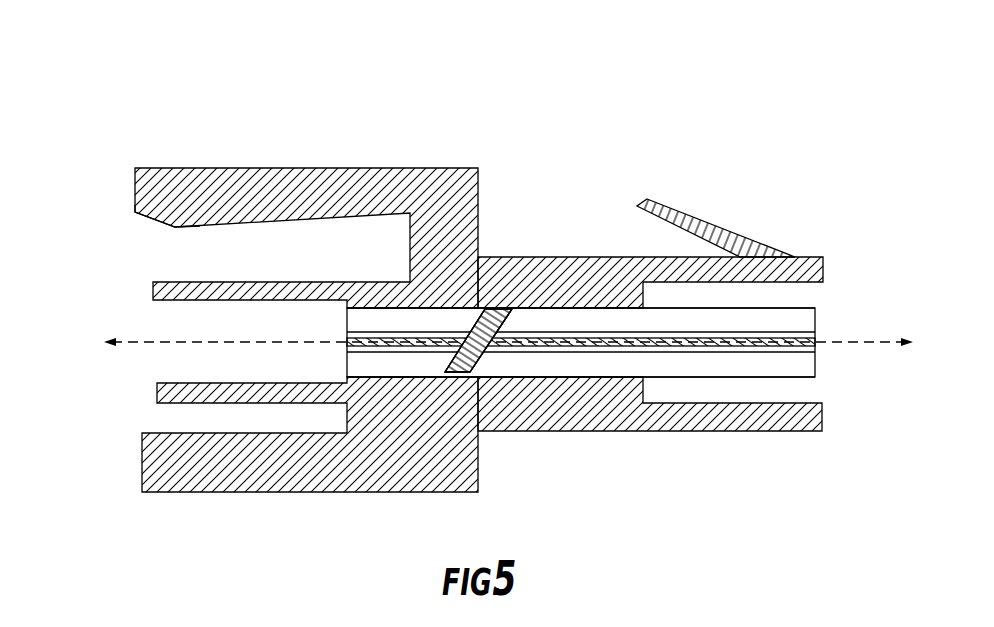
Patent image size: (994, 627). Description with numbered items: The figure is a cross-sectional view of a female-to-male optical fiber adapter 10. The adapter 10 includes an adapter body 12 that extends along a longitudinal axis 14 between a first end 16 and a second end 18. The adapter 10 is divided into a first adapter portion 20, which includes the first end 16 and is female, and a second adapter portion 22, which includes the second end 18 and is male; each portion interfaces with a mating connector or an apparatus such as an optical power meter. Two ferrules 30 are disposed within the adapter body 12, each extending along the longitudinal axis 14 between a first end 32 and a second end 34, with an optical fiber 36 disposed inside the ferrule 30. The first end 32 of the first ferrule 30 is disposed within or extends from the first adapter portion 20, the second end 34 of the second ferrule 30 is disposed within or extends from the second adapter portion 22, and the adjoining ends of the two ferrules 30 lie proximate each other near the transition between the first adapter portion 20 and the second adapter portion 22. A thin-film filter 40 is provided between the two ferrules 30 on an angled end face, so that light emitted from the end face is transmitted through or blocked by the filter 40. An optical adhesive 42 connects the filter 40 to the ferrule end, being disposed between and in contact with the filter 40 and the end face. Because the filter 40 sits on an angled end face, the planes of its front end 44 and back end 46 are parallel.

The adapter 10 is at (411, 125).
The adapter body 12 is at (283, 168).
The longitudinal axis 14 is at (160, 345).
The first end 16 is at (135, 186).
The second end 18 is at (823, 270).
The first adapter portion 20 is at (427, 422).
The second adapter portion 22 is at (573, 418).
The ferrule 30 is at (679, 368).
The first end 32 is at (336, 374).
The second end 34 is at (828, 380).
The optical fiber 36 is at (335, 338).
The thin-film filter 40 is at (476, 334).
The optical adhesive 42 is at (472, 372).
The front end 44 is at (447, 368).
The back end 46 is at (500, 335).